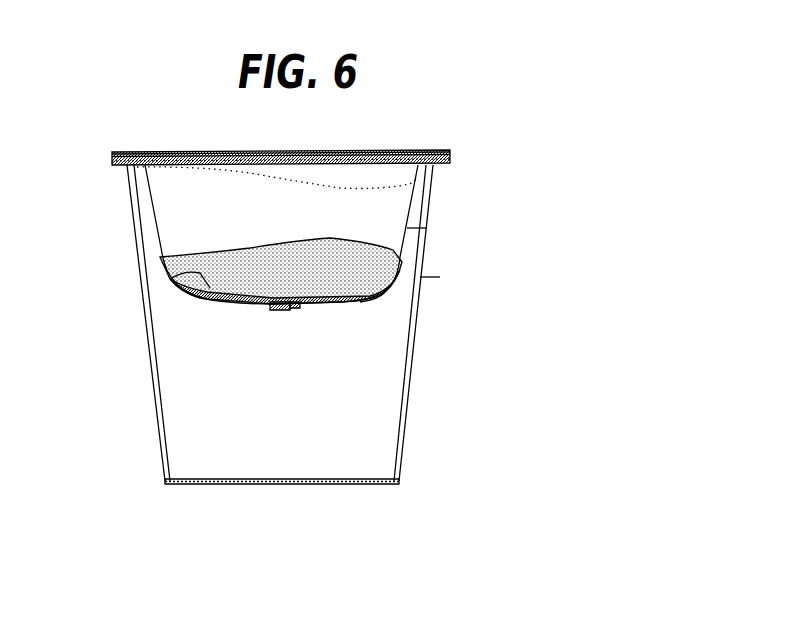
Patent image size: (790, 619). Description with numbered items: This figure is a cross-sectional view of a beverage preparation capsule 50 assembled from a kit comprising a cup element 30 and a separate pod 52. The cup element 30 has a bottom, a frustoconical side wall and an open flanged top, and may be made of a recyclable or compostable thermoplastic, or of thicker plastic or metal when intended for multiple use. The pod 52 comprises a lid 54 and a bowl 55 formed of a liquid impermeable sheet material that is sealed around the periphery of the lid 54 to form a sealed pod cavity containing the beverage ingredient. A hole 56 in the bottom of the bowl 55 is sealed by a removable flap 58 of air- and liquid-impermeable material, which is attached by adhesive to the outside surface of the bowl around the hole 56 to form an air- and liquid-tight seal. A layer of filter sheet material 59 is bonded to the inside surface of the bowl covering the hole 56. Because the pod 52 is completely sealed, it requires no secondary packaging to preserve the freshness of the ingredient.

The cup element 30 is at (440, 277).
The capsule 50 is at (463, 160).
The pod 52 is at (147, 193).
The lid 54 is at (402, 150).
The bowl 55 is at (427, 230).
The hole 56 is at (280, 308).
The removable flap 58 is at (295, 306).
The filter sheet material 59 is at (174, 279).